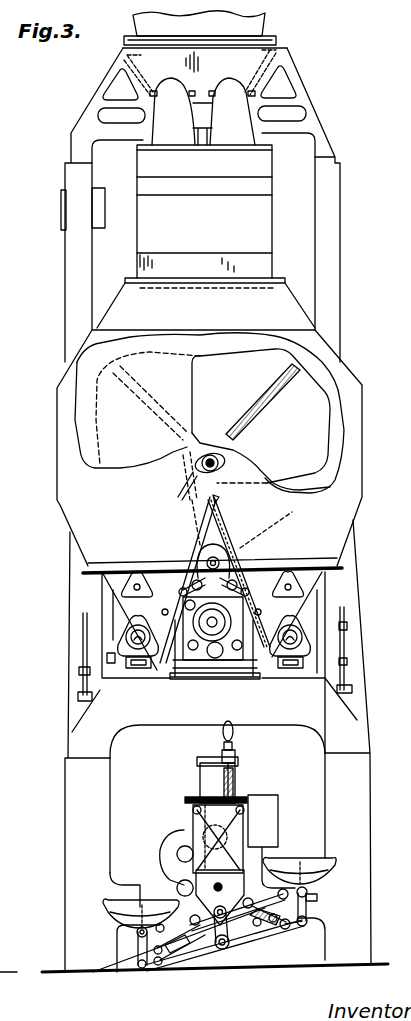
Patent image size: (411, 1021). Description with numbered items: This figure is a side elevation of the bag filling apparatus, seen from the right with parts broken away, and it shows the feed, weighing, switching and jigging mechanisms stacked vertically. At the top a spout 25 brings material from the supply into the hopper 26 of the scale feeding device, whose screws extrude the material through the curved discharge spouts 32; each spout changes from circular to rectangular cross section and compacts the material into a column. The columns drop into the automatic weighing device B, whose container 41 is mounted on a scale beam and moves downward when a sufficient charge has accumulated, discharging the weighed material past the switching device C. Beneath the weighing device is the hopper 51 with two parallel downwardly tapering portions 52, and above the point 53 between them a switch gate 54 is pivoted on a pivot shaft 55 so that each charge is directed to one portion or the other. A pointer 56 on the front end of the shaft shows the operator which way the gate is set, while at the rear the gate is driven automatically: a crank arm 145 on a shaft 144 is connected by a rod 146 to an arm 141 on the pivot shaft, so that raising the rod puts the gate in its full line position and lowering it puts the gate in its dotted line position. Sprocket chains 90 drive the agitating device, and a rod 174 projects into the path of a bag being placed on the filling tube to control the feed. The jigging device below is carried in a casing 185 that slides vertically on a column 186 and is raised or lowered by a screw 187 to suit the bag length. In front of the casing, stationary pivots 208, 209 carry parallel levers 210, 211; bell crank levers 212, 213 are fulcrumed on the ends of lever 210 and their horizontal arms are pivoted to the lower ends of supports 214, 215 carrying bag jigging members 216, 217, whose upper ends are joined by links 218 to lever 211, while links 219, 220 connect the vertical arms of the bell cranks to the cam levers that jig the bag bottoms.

The spout 25 is at (255, 27).
The hopper 26 is at (270, 46).
The discharge spout 32 is at (238, 107).
The automatic weighing device B is at (262, 222).
The container 41 is at (265, 242).
The switching device C is at (343, 373).
The hopper 51 is at (353, 431).
The switch gate 54 is at (152, 380).
The pivot shaft 55 is at (212, 455).
The hub lobe 141 is at (210, 450).
The rod 146 is at (192, 468).
The point 53 is at (215, 498).
The pointer 56 is at (186, 502).
The crank arm 145 is at (282, 526).
The shaft 144 is at (222, 560).
The downwardly tapering portions 52 is at (88, 537).
The sprocket chains 90 is at (175, 620).
The rod 174 is at (140, 668).
The column 186 is at (210, 781).
The screw 187 is at (238, 781).
The casing 185 is at (185, 828).
The bag jigging member 217 is at (128, 905).
The bag jigging member 216 is at (333, 872).
The link 219 is at (242, 897).
The links 218 is at (310, 896).
The support 214 is at (322, 905).
The bell crank lever 212 is at (292, 922).
The support 215 is at (133, 950).
The bell crank lever 213 is at (160, 958).
The link 220 is at (173, 958).
The stationary pivot 208 is at (205, 948).
The stationary pivot 209 is at (220, 948).
The lever 210 is at (240, 945).
The lever 211 is at (275, 935).